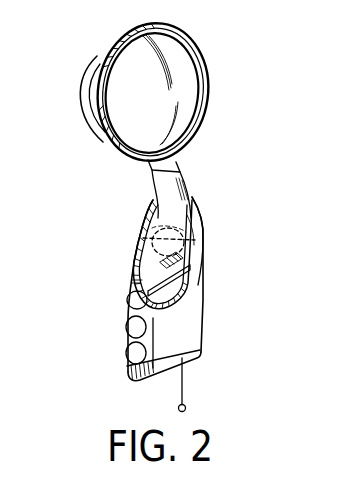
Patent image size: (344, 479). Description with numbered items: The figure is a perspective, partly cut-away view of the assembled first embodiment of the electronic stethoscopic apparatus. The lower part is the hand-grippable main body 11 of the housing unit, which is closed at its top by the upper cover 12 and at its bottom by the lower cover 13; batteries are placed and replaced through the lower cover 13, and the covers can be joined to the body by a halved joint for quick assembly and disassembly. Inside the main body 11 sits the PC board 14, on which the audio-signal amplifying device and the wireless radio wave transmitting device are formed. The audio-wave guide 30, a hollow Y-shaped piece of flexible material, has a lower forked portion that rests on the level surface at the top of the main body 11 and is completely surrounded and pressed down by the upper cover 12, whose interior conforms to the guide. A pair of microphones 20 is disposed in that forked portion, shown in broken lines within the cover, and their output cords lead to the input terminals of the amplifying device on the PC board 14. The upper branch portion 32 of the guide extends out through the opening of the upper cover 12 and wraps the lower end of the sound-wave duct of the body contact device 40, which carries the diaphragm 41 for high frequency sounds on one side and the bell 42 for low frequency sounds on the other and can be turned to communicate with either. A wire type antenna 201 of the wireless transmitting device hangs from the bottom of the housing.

The main body 11 is at (201, 310).
The upper cover 12 is at (203, 227).
The lower cover 13 is at (196, 361).
The PC board 14 is at (158, 292).
The microphones 20 is at (142, 236).
The wire type antenna 201 is at (186, 395).
The audio-wave guide 30 is at (198, 184).
The upper branch portion 32 is at (178, 173).
The body contact device 40 is at (152, 92).
The diaphragm 41 is at (188, 52).
The bell 42 is at (83, 89).